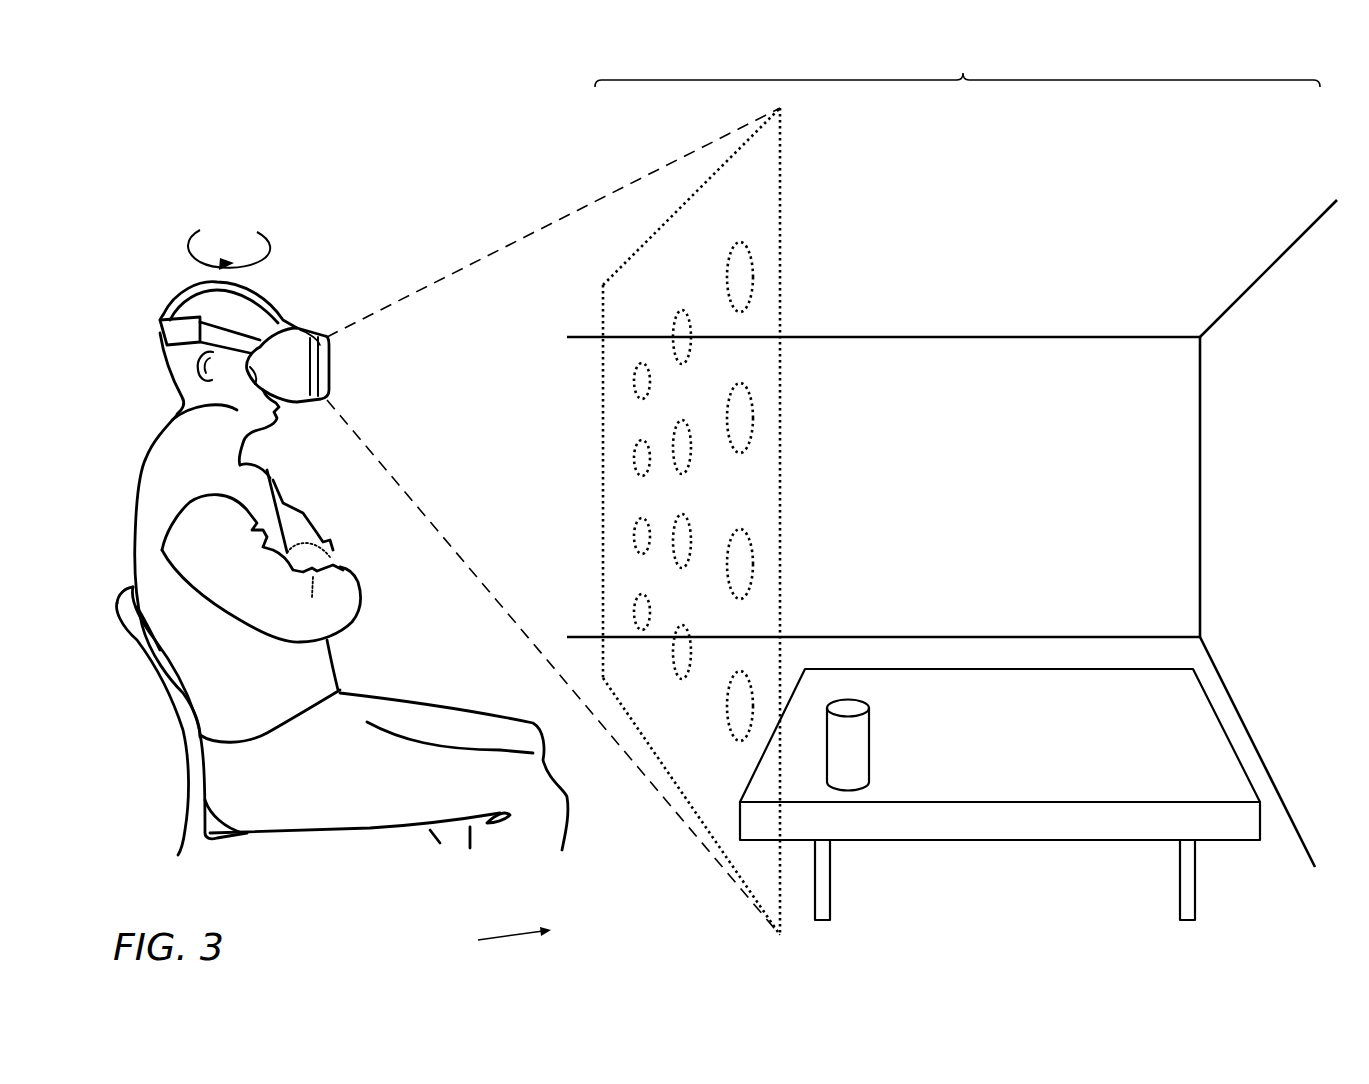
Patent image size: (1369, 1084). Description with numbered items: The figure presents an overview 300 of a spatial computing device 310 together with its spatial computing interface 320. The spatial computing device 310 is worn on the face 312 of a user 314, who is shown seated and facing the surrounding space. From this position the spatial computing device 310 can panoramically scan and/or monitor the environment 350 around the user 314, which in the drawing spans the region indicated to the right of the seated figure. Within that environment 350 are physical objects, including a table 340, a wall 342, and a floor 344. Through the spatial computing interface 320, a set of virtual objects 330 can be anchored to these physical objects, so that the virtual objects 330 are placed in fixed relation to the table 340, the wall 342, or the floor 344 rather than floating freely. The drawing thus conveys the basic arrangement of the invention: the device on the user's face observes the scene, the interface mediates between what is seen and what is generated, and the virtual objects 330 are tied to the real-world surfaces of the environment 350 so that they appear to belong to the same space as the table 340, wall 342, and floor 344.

The overview 300 is at (105, 88).
The spatial computing device 310 is at (307, 327).
The face 312 is at (175, 419).
The user 314 is at (133, 470).
The spatial computing interface 320 is at (553, 532).
The virtual objects 330 is at (753, 278).
The table 340 is at (973, 683).
The wall 342 is at (1261, 323).
The floor 344 is at (887, 653).
The environment 350 is at (952, 480).